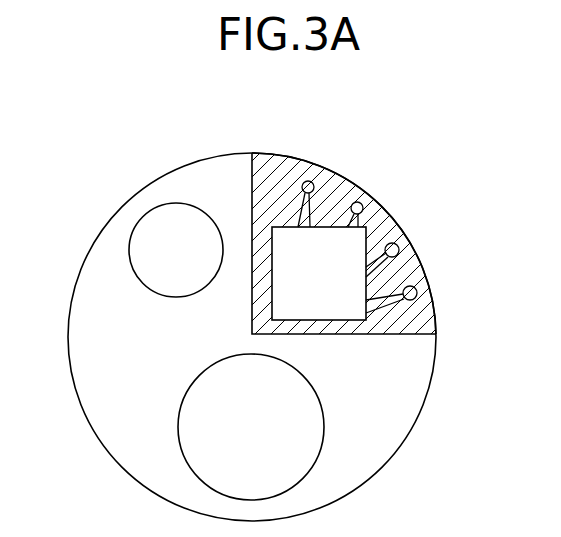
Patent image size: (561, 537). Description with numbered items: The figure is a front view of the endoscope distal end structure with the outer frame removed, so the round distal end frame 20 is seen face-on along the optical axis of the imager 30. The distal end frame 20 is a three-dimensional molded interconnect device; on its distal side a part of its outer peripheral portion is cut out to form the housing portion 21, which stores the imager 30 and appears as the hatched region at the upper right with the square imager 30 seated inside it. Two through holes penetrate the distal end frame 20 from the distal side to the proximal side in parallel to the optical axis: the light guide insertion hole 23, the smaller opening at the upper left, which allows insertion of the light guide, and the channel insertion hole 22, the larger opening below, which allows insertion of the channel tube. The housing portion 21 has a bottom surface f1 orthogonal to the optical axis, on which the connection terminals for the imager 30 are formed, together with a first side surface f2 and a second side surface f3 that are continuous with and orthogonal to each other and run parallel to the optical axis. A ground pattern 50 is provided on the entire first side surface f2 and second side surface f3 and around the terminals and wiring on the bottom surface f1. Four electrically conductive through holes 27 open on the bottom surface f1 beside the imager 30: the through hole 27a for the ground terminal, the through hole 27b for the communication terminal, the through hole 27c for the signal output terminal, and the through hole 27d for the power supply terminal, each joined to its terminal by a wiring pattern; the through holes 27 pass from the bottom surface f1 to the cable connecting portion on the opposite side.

The distal end frame 20 is at (203, 160).
The housing portion 21 is at (435, 320).
The channel insertion hole 22 is at (200, 430).
The light guide insertion hole 23 is at (147, 245).
The through hole 27 is at (429, 205).
The electrical conductive through hole 27a is at (417, 293).
The electrical conductive through hole 27b is at (400, 250).
The electrical conductive through hole 27c is at (366, 200).
The electrical conductive through hole 27d is at (313, 179).
The imager 30 is at (293, 303).
The ground pattern 50 is at (380, 223).
The bottom surface f1 is at (283, 172).
The first side surface f2 is at (408, 320).
The second side surface f3 is at (286, 178).